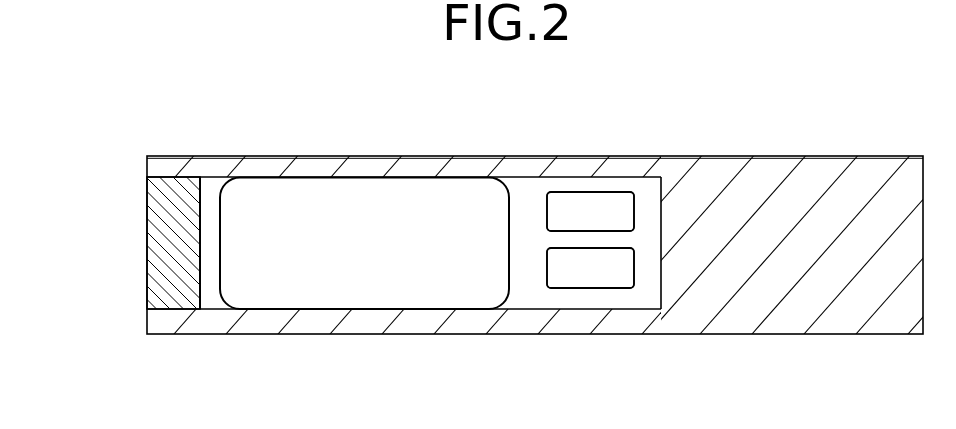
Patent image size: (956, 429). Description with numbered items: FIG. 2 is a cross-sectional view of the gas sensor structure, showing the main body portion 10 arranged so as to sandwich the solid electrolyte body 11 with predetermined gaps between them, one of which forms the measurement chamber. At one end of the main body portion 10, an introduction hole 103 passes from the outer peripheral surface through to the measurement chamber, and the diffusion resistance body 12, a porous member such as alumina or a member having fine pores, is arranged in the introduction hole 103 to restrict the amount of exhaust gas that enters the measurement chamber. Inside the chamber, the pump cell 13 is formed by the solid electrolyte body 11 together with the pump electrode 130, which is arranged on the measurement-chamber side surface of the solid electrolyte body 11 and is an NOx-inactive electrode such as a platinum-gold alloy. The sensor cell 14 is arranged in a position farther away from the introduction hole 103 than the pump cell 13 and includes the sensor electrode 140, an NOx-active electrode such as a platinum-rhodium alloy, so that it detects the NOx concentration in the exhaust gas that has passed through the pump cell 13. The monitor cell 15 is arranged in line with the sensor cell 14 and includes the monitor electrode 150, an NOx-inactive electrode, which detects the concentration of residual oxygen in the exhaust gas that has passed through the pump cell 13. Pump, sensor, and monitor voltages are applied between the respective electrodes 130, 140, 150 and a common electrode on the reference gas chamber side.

The main body portion 10 is at (488, 157).
The solid electrolyte body 11 is at (532, 290).
The diffusion resistance body 12 is at (147, 257).
The pump cell 13 is at (415, 177).
The sensor cell 14 is at (618, 289).
The monitor cell 15 is at (617, 192).
The introduction hole 103 is at (175, 178).
The pump electrode 130 is at (328, 212).
The sensor electrode 140 is at (589, 278).
The monitor electrode 150 is at (587, 212).